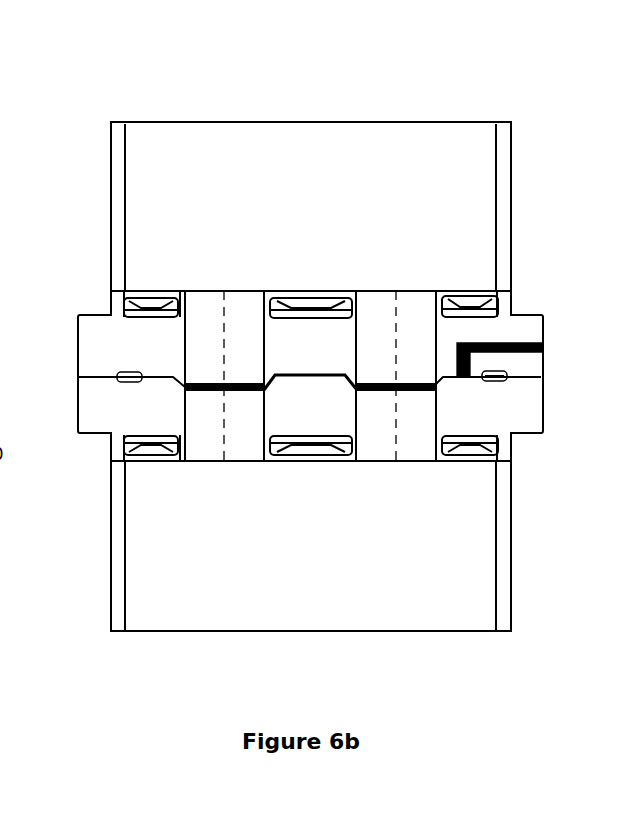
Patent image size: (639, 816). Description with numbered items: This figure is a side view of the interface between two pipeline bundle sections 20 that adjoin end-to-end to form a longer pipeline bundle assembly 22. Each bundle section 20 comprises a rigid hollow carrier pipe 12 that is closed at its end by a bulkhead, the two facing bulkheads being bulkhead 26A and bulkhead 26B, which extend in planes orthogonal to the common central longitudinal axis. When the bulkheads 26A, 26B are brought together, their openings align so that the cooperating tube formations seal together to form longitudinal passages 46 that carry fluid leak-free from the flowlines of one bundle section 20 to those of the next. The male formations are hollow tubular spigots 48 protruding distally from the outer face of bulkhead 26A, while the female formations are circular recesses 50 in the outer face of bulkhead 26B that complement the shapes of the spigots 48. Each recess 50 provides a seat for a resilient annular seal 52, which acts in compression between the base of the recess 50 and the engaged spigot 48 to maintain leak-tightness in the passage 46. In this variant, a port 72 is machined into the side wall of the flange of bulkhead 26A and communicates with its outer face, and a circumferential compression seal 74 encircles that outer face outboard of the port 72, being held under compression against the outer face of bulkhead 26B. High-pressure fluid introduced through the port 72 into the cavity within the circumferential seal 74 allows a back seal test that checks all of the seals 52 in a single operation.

The carrier pipe 12 is at (117, 172).
The bundle section 20 is at (545, 172).
The pipeline bundle assembly 22 is at (567, 292).
The bulkhead 26A is at (103, 332).
The bulkhead 26B is at (118, 416).
The longitudinal passage 46 is at (415, 308).
The spigot 48 is at (440, 383).
The recess 50 is at (380, 393).
The seal 52 is at (378, 384).
The port 72 is at (523, 351).
The circumferential compression seal 74 is at (125, 375).